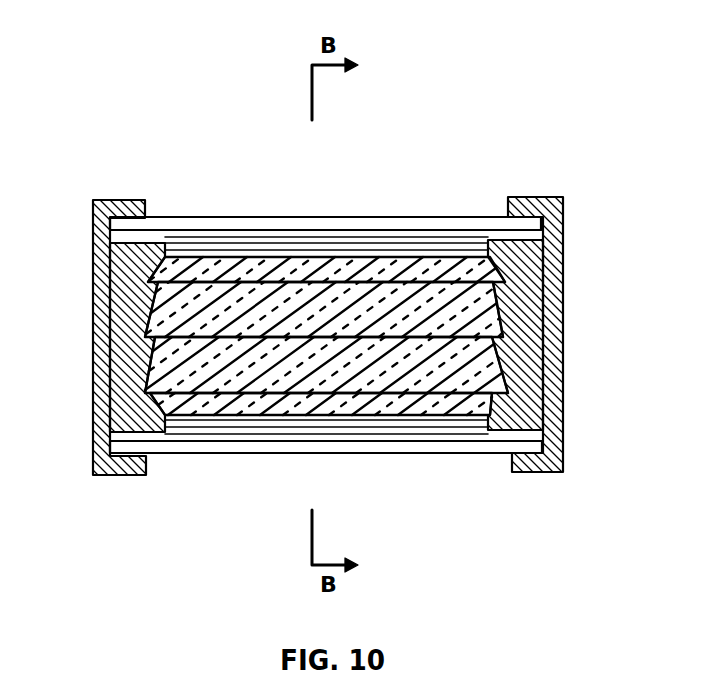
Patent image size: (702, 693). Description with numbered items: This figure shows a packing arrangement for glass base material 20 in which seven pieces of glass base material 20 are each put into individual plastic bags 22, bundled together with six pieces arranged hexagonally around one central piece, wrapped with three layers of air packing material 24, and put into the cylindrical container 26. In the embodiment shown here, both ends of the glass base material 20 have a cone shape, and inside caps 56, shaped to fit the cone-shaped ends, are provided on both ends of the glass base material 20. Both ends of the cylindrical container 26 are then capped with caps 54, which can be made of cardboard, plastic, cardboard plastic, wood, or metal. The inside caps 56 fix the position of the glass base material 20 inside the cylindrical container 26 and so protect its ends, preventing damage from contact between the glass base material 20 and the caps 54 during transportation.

The glass base material 20 is at (313, 275).
The plastic bag 22 is at (248, 253).
The air packing material 24 is at (473, 223).
The cylindrical container 26 is at (185, 222).
The cap 54 is at (92, 332).
The inside cap 56 is at (92, 250).